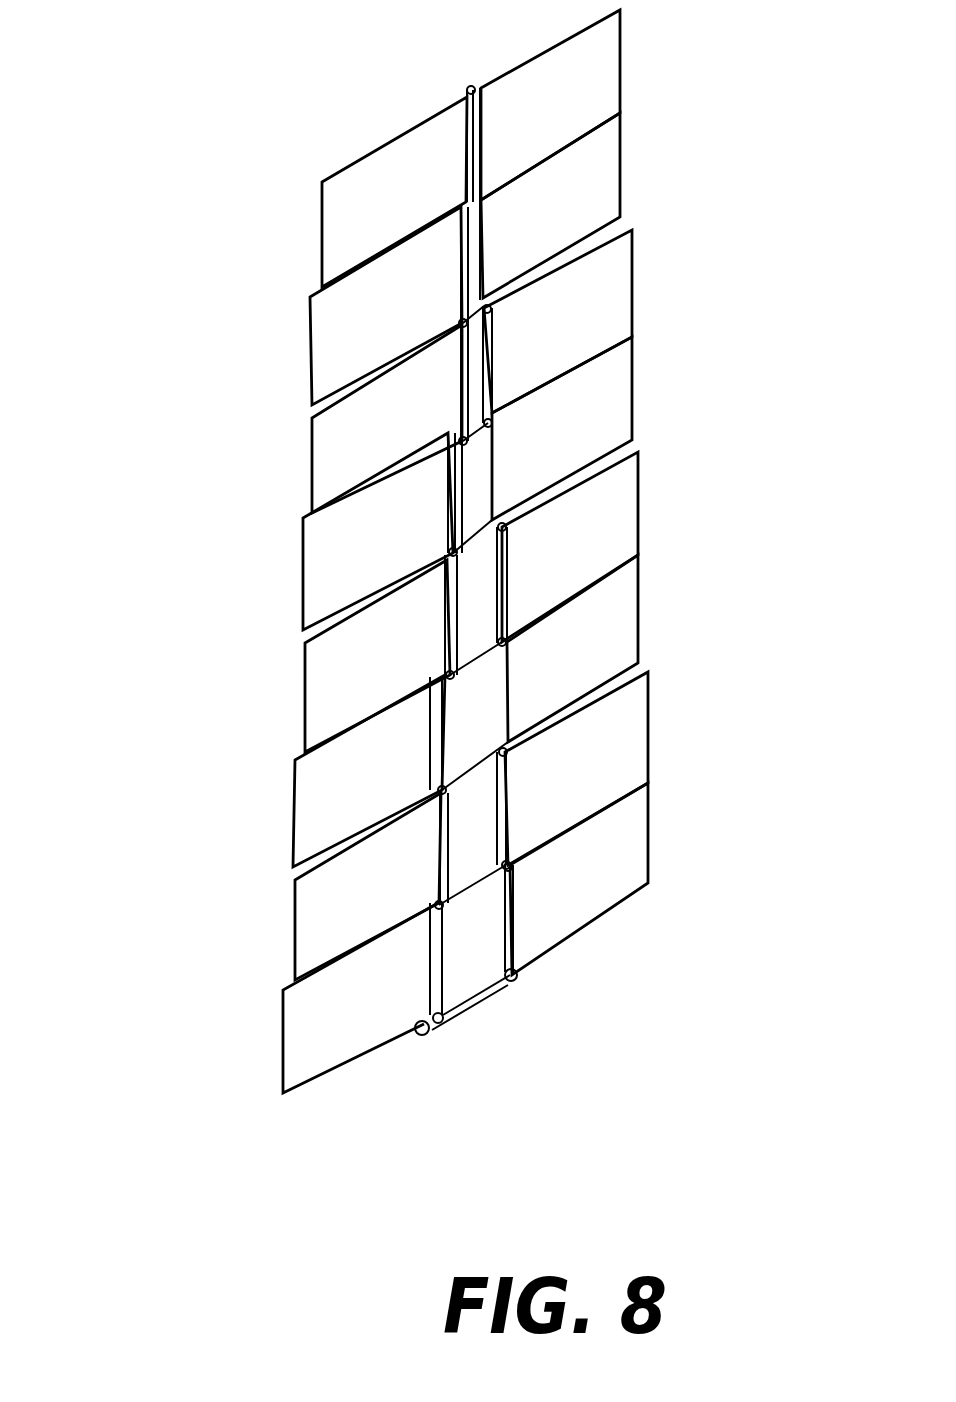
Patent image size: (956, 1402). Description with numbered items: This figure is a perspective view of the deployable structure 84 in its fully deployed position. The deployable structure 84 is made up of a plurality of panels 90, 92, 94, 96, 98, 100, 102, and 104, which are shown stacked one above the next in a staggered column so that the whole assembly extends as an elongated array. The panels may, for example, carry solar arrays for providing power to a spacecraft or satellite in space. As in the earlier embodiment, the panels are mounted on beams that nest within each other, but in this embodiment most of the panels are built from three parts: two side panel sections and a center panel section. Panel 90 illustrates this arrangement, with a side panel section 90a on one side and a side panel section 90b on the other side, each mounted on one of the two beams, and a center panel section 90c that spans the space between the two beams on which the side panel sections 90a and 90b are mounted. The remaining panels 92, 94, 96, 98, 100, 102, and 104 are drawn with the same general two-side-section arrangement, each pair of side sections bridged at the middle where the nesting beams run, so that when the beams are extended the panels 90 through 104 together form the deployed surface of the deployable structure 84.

The deployable structure 84 is at (232, 180).
The panel 90 is at (656, 833).
The side panel section 90a is at (352, 1032).
The side panel section 90b is at (590, 890).
The center panel section 90c is at (480, 960).
The panel 92 is at (656, 725).
The panel 94 is at (646, 613).
The panel 96 is at (648, 506).
The panel 98 is at (639, 395).
The panel 100 is at (639, 291).
The panel 102 is at (633, 181).
The panel 104 is at (629, 70).